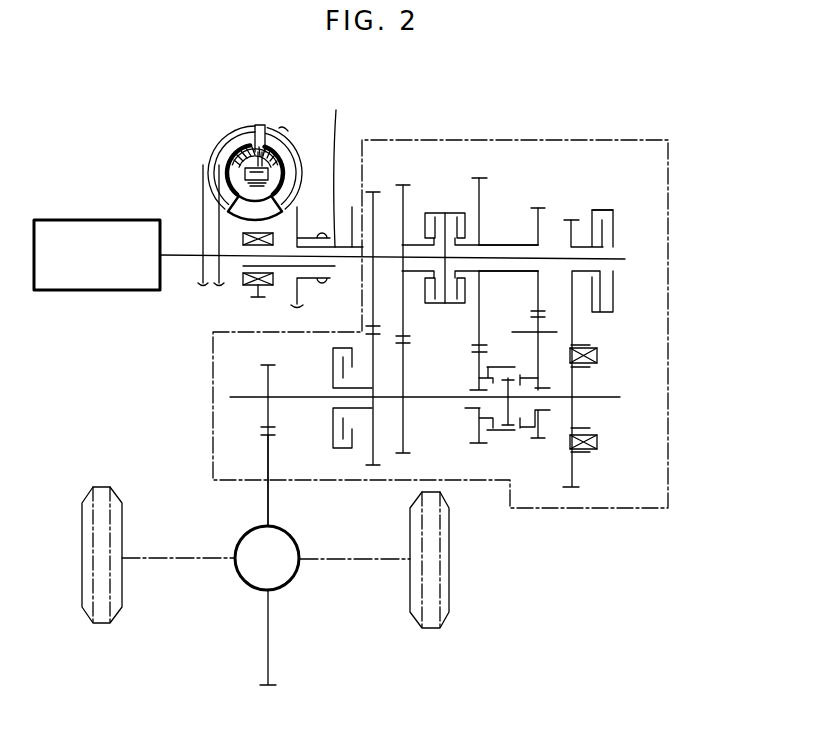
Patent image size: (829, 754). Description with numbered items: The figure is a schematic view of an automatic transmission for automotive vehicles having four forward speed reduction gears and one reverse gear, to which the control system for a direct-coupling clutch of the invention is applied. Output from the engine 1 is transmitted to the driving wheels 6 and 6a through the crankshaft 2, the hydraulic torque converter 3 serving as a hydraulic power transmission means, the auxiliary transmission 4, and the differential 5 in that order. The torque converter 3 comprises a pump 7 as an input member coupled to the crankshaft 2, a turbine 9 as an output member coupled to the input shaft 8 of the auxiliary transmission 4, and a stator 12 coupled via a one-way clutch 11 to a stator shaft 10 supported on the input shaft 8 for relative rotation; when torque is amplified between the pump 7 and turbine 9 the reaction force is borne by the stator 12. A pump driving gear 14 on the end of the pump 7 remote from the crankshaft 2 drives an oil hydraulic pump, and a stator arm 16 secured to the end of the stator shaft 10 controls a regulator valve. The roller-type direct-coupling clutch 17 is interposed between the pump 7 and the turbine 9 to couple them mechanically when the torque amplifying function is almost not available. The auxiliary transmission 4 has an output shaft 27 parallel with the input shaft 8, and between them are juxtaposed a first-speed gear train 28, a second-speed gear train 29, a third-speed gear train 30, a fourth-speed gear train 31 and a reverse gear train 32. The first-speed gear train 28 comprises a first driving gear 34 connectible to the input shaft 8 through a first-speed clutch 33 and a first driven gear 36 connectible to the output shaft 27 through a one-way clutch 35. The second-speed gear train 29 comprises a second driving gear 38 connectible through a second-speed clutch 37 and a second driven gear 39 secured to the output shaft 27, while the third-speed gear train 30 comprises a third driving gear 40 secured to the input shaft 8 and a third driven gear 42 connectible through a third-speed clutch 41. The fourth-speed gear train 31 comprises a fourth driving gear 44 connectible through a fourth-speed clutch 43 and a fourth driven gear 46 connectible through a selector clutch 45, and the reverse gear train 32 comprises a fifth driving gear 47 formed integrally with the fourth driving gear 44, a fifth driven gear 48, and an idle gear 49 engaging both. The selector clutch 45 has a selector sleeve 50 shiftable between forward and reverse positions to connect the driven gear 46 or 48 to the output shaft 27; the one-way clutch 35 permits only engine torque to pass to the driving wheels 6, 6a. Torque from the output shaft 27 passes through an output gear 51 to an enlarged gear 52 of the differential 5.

The engine 1 is at (45, 292).
The crankshaft 2 is at (173, 258).
The hydraulic torque converter 3 is at (250, 126).
The auxiliary transmission 4 is at (672, 170).
The differential 5 is at (292, 577).
The driving wheel 6 is at (118, 615).
The driving wheel 6a is at (446, 626).
The pump 7 is at (284, 132).
The input shaft 8 is at (290, 258).
The turbine 9 is at (250, 152).
The stator shaft 10 is at (338, 165).
The one-way clutch 11 is at (247, 237).
The stator 12 is at (235, 202).
The pump driving gear 14 is at (320, 233).
The stator arm 16 is at (350, 245).
The direct-coupling clutch 17 is at (227, 156).
The output shaft 27 is at (230, 397).
The first-speed gear train 28 is at (573, 218).
The second-speed gear train 29 is at (406, 182).
The third-speed gear train 30 is at (373, 189).
The fourth-speed gear train 31 is at (480, 176).
The reverse gear train 32 is at (538, 206).
The first-speed clutch 33 is at (614, 210).
The first driving gear 34 is at (573, 227).
The one-way clutch 35 is at (597, 442).
The first driven gear 36 is at (573, 323).
The second-speed clutch 37 is at (432, 211).
The second driving gear 38 is at (402, 210).
The second driven gear 39 is at (406, 345).
The third driving gear 40 is at (371, 306).
The third-speed clutch 41 is at (333, 352).
The third driven gear 42 is at (370, 446).
The fourth-speed clutch 43 is at (457, 212).
The fourth driving gear 44 is at (482, 206).
The selector clutch 45 is at (488, 446).
The fourth driven gear 46 is at (478, 367).
The fifth driving gear 47 is at (540, 227).
The fifth driven gear 48 is at (540, 378).
The idle gear 49 is at (538, 321).
The selector sleeve 50 is at (504, 432).
The output gear 51 is at (265, 372).
The enlarged gear 52 is at (265, 458).